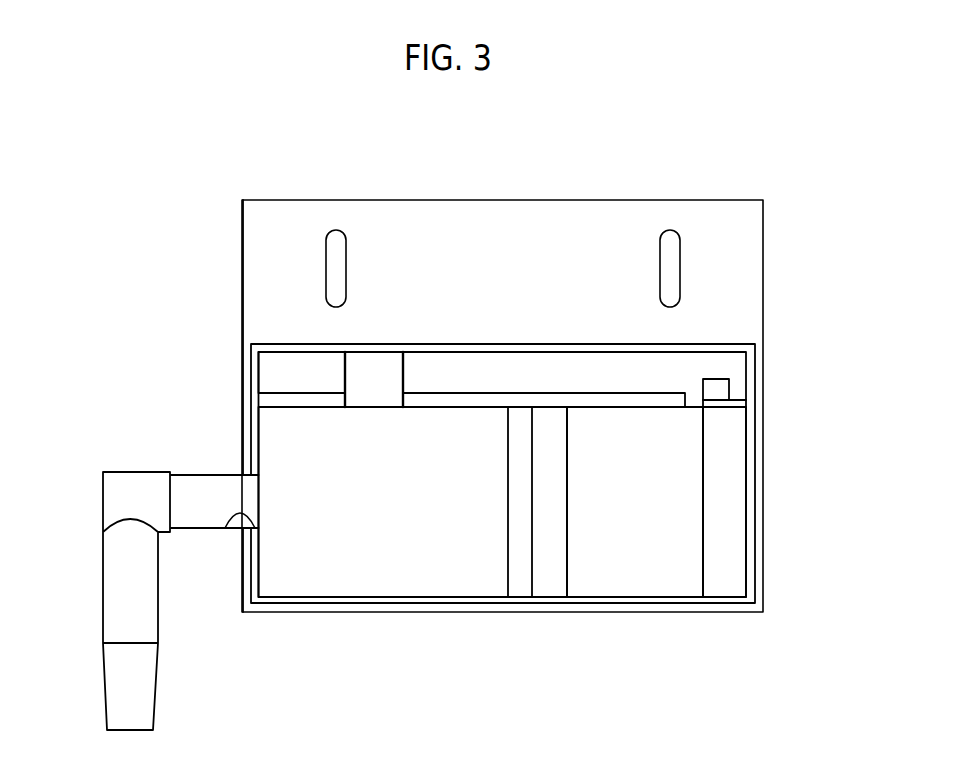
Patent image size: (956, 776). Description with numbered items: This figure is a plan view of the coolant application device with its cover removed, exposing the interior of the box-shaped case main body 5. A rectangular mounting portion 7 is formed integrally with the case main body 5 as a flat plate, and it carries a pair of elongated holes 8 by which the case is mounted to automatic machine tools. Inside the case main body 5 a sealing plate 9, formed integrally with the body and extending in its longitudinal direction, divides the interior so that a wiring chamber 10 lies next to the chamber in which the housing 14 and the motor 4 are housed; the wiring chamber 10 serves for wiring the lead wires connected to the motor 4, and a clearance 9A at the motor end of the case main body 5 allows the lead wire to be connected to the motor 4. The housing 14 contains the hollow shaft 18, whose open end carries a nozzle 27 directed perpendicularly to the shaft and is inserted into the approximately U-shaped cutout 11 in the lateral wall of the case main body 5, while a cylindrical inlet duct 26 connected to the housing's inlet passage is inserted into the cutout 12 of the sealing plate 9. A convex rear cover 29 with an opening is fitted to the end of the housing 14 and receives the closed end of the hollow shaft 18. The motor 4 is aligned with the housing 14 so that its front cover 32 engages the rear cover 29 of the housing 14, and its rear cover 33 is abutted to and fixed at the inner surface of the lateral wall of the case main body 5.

The motor 4 is at (639, 565).
The case main body 5 is at (758, 585).
The mounting portion 7 is at (507, 222).
The elongated holes 8 is at (336, 240).
The sealing plate 9 is at (638, 400).
The clearance 9A is at (693, 402).
The wiring chamber 10 is at (678, 368).
The cutout 11 is at (229, 527).
The cutout 12 is at (398, 398).
The housing 14 is at (373, 555).
The hollow shaft 18 is at (202, 497).
The inlet duct 26 is at (355, 368).
The nozzle 27 is at (122, 585).
The rear cover 29 is at (520, 586).
The front cover 32 is at (549, 586).
The rear cover 33 is at (723, 586).